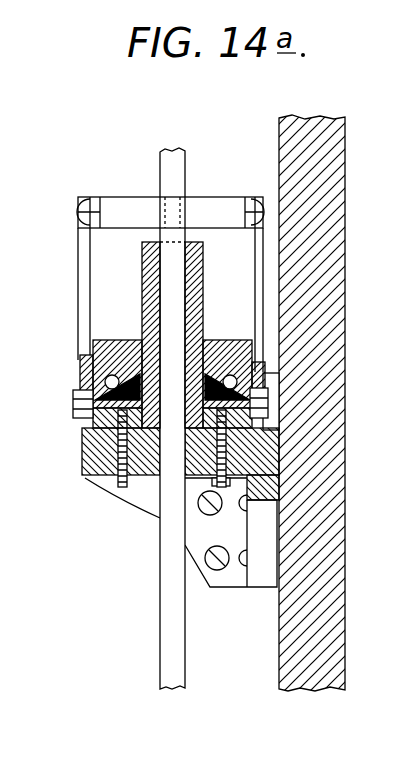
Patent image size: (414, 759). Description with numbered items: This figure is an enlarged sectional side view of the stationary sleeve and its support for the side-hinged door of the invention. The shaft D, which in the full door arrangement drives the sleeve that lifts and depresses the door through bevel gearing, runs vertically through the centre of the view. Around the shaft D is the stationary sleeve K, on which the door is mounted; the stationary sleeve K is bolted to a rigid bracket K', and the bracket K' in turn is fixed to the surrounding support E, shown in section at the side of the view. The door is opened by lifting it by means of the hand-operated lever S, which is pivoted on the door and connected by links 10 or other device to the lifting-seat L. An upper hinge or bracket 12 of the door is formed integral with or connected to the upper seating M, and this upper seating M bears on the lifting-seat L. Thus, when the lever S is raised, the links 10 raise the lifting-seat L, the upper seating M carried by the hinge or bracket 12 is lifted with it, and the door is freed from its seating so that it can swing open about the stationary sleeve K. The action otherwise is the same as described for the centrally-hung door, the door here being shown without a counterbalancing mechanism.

The wall / support E is at (322, 278).
The shaft D is at (183, 160).
The hand-operated lever S is at (135, 198).
The links 10 is at (79, 283).
The upper hinge or bracket 12 is at (220, 352).
The stationary sleeve K is at (128, 344).
The rigid bracket K' is at (154, 518).
The upper seating M is at (82, 372).
The lifting-seat L is at (78, 412).